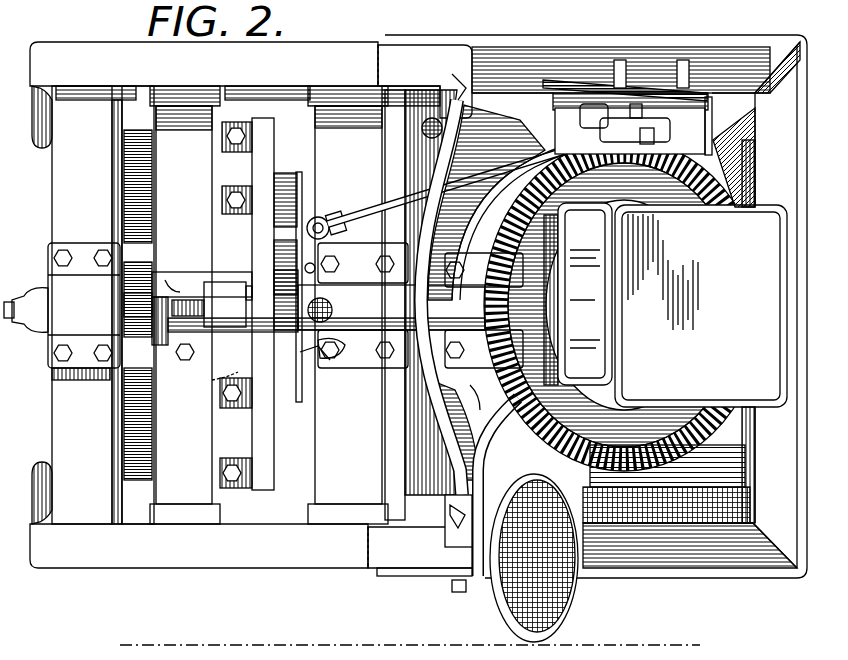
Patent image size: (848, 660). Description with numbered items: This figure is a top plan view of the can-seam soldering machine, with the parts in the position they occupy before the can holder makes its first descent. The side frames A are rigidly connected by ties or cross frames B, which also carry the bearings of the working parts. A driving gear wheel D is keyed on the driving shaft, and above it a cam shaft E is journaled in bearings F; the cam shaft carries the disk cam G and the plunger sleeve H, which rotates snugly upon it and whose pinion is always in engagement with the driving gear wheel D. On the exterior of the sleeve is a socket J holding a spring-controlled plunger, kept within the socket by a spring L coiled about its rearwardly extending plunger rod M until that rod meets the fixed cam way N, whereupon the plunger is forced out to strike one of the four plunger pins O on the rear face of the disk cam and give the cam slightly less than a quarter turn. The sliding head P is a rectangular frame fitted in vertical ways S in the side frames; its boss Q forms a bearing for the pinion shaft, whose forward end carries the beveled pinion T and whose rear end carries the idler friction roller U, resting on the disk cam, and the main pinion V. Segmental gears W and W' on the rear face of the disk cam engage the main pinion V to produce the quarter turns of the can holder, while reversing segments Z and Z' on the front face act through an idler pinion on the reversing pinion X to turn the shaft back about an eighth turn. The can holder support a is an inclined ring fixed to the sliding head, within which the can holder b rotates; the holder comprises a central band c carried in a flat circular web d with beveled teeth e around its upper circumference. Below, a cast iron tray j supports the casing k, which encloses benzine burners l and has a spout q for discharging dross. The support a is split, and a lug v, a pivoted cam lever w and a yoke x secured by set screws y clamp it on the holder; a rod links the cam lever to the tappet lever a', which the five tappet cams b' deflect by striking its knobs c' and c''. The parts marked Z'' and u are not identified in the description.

The side frames A is at (251, 317).
The ties or cross frames B is at (218, 305).
The driving gear wheel D is at (138, 305).
The bearings F is at (177, 311).
The disk cam G is at (263, 304).
The plunger sleeve H is at (175, 287).
The socket J is at (209, 304).
The spring L is at (233, 339).
The plunger rod M is at (202, 284).
The fixed cam way N is at (160, 321).
The main pinion V is at (233, 287).
The cam shaft E is at (138, 305).
The idler friction roller U is at (277, 300).
The segmental gear W' is at (236, 265).
The segmental gear W is at (236, 472).
The reversing segment Z' is at (285, 200).
The pinion Z'' is at (285, 267).
The tappet cams b' is at (307, 287).
The plunger pins O is at (387, 507).
The reversing pinion X is at (312, 305).
The boss Q is at (410, 305).
The knob c' is at (331, 346).
The knob c'' is at (315, 261).
The tappet lever a' is at (340, 231).
The flat circular web d is at (312, 380).
The reversing segment Z is at (453, 189).
The sliding head P is at (426, 400).
The vertical ways S is at (488, 463).
The roller u is at (432, 121).
The beveled teeth e is at (475, 391).
The can holder support a is at (608, 303).
The can holder b is at (624, 305).
The beveled pinion T is at (523, 298).
The central band c is at (664, 320).
The cast iron casing k is at (669, 315).
The cast iron tray j is at (520, 137).
The spout q is at (572, 131).
The set screws y is at (640, 78).
The benzine burners l is at (623, 83).
The cam lever w is at (594, 116).
The yoke x is at (635, 123).
The lug v is at (648, 136).